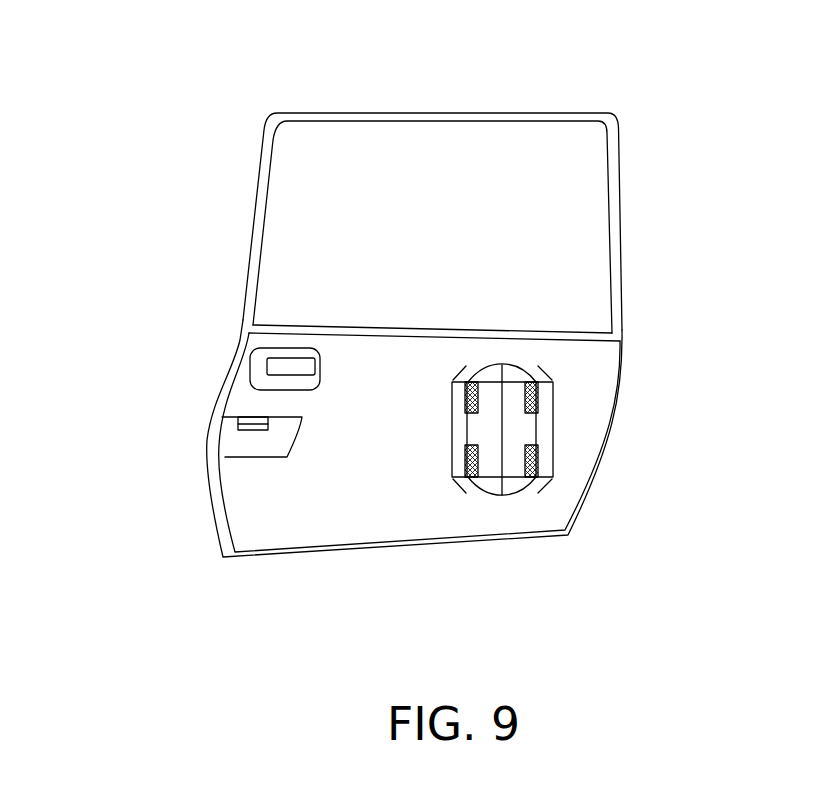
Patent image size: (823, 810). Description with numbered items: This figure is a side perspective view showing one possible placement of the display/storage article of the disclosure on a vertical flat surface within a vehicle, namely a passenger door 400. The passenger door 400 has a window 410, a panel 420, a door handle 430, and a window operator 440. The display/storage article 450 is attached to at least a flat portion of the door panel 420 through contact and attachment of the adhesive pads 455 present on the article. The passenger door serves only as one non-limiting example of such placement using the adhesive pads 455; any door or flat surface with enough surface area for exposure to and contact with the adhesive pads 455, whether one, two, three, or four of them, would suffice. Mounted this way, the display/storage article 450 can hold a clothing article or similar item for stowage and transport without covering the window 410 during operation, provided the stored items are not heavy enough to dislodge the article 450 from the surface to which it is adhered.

The passenger door 400 is at (652, 73).
The window 410 is at (570, 265).
The panel 420 is at (593, 393).
The door handle 430 is at (265, 363).
The window operator 440 is at (250, 433).
The display/storage article 450 is at (510, 380).
The adhesive pads 455 is at (533, 462).